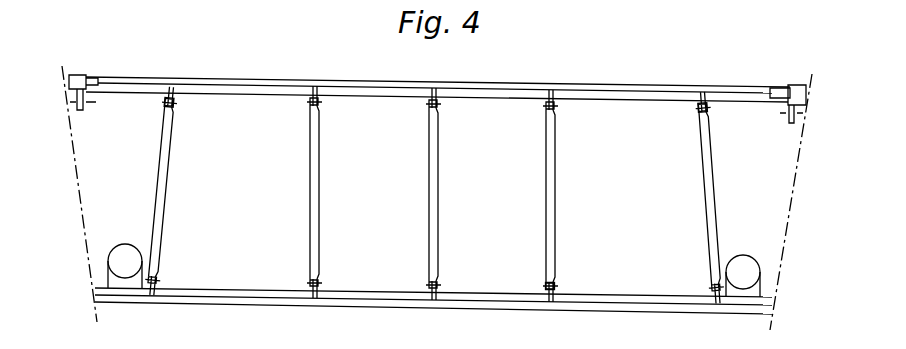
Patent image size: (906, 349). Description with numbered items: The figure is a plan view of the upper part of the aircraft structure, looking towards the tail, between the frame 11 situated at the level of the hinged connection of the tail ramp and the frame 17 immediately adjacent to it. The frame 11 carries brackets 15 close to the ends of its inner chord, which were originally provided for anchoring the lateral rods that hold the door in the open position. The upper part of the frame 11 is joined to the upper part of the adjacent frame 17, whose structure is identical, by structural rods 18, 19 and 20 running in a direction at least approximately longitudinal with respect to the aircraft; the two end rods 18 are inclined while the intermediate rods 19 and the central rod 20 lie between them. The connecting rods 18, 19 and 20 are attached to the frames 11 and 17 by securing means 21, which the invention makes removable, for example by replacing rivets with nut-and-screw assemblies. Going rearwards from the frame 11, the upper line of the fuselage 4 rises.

The fuselage 4 is at (791, 238).
The frame 11 is at (275, 66).
The brackets 15 is at (84, 110).
The frame 17 is at (282, 319).
The structural rod 18 is at (164, 212).
The structural rod 19 is at (320, 213).
The structural rod 20 is at (440, 213).
The securing means 21 is at (173, 105).